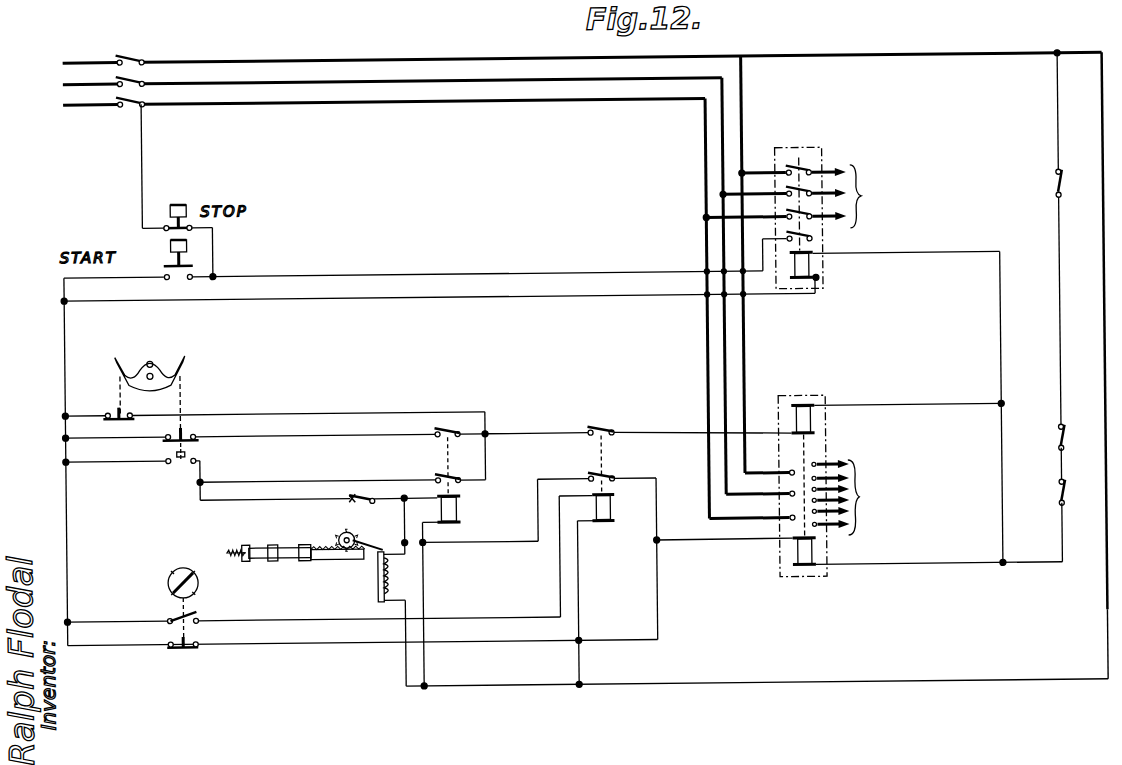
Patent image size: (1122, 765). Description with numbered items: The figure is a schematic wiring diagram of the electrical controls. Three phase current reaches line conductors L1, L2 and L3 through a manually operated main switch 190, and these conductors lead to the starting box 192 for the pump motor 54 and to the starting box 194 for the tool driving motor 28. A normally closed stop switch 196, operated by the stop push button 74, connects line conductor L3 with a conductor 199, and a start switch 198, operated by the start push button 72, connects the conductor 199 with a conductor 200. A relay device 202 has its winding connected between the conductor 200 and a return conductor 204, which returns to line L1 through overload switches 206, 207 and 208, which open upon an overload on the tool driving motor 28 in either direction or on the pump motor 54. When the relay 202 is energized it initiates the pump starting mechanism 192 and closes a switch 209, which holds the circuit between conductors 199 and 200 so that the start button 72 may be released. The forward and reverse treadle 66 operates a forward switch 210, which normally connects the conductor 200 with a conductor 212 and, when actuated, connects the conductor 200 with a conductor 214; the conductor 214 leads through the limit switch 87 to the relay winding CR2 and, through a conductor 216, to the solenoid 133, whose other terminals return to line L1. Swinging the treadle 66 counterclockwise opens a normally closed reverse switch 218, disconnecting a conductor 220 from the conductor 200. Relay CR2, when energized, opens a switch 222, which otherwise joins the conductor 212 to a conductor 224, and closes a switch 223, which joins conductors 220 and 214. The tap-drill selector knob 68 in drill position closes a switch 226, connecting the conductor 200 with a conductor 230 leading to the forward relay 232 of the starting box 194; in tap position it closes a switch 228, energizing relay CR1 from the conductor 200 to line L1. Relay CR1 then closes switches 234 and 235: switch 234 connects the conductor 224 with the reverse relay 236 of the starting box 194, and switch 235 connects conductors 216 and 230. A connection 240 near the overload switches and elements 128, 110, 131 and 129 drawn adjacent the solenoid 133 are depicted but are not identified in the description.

The line conductor L1 is at (281, 59).
The line conductor L2 is at (306, 79).
The line conductor L3 is at (376, 101).
The main switch 190 is at (138, 48).
The stop push button 74 is at (185, 201).
The start push button 72 is at (164, 234).
The stop switch 196 is at (194, 228).
The start switch 198 is at (194, 262).
The conductor 199 is at (276, 274).
The conductor 200 is at (63, 297).
The starting box 192 is at (797, 155).
The pump motor 54 is at (917, 196).
The switch 209 is at (820, 243).
The relay device 202 is at (819, 275).
The return conductor 204 is at (1002, 303).
The overload switch 208 is at (1060, 191).
The overload switch 207 is at (1061, 445).
The overload switch 206 is at (1061, 499).
The conductor from forward coil 240 is at (1025, 571).
The starting box 194 is at (812, 401).
The tool driving motor 28 is at (911, 497).
The reverse relay 236 is at (814, 431).
The forward relay 232 is at (811, 559).
The forward and reverse treadle 66 is at (187, 363).
The reverse switch 218 is at (117, 412).
The conductor 220 is at (408, 411).
The forward switch 210 is at (199, 454).
The conductor 212 is at (317, 435).
The conductor 214 is at (273, 497).
The limit switch 87 is at (374, 476).
The switch 222 is at (461, 432).
The switch 223 is at (461, 478).
The conductor 224 is at (519, 432).
The switch 234 is at (599, 428).
The switch 235 is at (604, 478).
The conductor 216 is at (402, 525).
The relay winding CR2 is at (459, 513).
The relay CR1 is at (612, 513).
The conductor 230 is at (656, 579).
The switch 228 is at (164, 612).
The switch 226 is at (180, 646).
The tap-drill selector knob 68 is at (193, 541).
The spring 128 is at (223, 548).
The rod 110 is at (268, 546).
The rack 131 is at (343, 544).
The pinion 129 is at (333, 560).
The solenoid 133 is at (387, 576).